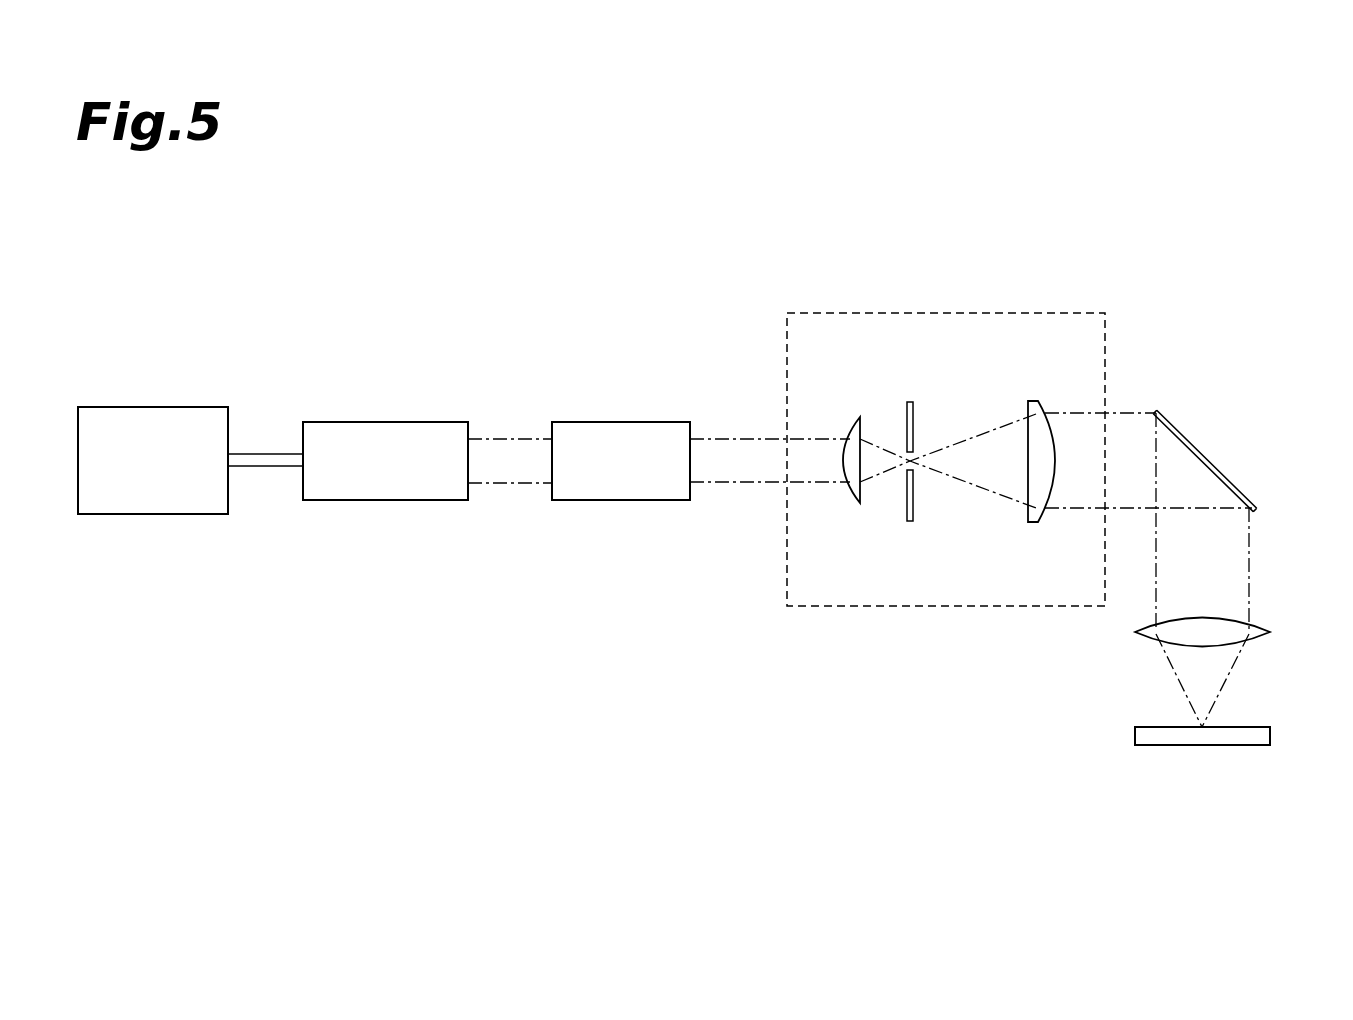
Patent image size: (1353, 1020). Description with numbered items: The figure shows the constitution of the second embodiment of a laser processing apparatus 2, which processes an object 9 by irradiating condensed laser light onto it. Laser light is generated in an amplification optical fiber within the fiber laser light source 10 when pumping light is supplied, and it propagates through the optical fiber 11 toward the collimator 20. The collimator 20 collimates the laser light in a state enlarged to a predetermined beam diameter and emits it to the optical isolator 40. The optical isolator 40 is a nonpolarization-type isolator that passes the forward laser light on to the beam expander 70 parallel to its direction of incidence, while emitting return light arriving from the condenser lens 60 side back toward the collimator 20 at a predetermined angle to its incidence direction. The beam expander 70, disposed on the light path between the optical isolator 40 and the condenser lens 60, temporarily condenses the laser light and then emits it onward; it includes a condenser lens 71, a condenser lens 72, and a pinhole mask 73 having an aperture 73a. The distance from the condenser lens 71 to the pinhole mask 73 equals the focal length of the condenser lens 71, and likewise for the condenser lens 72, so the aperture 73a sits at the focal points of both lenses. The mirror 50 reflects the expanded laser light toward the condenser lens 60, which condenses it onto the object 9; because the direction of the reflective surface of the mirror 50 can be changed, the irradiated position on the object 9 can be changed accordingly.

The laser processing apparatus 2 is at (1183, 248).
The object 9 is at (1243, 727).
The fiber laser light source 10 is at (143, 406).
The optical fiber 11 is at (262, 452).
The collimator 20 is at (381, 421).
The optical isolator 40 is at (633, 421).
The mirror 50 is at (1178, 428).
The condenser lens 60 is at (1258, 622).
The beam expander 70 is at (940, 312).
The condenser lens 71 is at (852, 506).
The condenser lens 72 is at (1045, 510).
The pinhole mask 73 is at (913, 522).
The aperture 73a is at (906, 456).